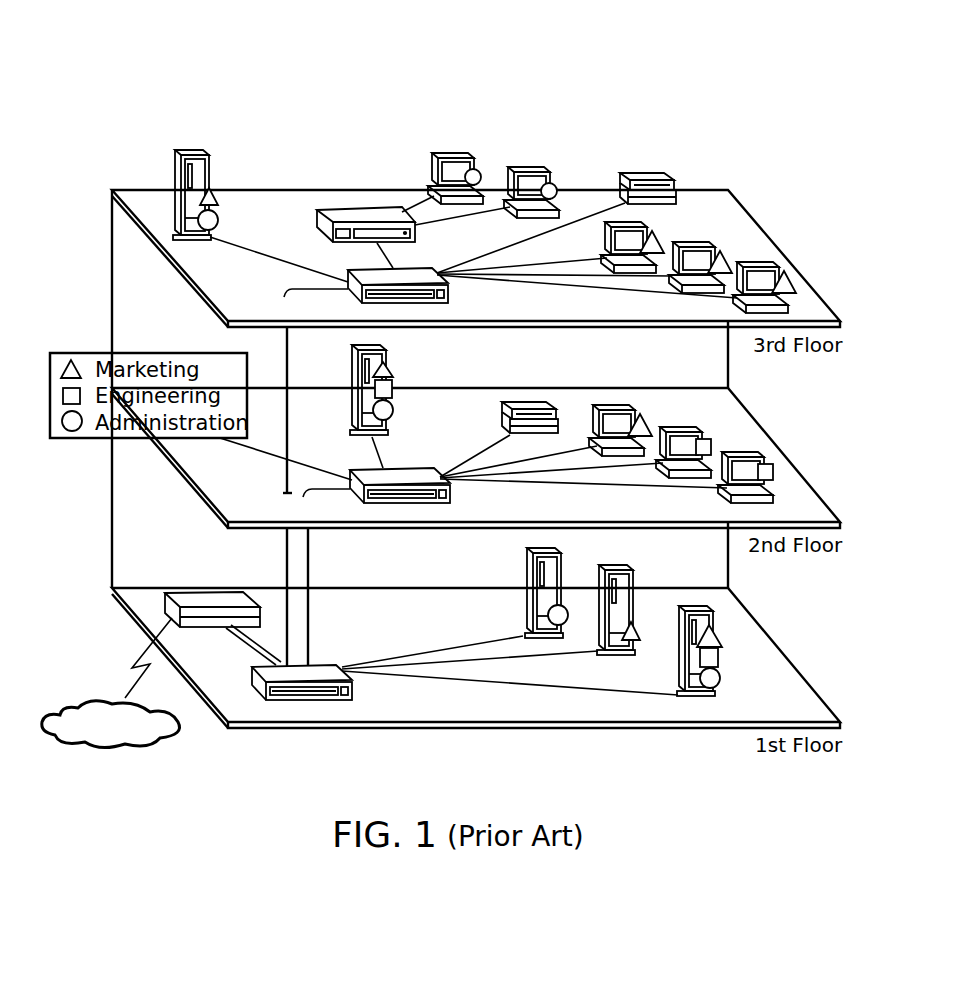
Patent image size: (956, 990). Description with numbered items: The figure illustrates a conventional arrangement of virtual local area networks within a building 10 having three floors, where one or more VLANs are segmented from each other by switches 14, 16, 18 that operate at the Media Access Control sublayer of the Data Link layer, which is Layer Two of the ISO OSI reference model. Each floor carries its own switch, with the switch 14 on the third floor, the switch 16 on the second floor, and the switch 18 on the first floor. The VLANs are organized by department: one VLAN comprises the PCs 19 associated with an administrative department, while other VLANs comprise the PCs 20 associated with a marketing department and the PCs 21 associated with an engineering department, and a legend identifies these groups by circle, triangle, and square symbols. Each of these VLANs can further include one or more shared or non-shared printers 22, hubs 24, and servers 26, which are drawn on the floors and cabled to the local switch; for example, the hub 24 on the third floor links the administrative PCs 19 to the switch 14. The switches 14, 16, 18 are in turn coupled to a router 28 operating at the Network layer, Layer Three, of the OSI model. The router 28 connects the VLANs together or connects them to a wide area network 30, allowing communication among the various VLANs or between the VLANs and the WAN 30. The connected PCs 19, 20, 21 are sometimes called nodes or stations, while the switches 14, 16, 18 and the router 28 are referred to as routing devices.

The building 10 is at (206, 70).
The switch 14 is at (413, 278).
The switch 16 is at (355, 468).
The switch 18 is at (323, 668).
The PCs 19 is at (522, 165).
The PCs 20 is at (648, 220).
The PCs 21 is at (705, 427).
The printers 22 is at (677, 181).
The hubs 24 is at (343, 210).
The servers 26 is at (200, 163).
The router 28 is at (193, 600).
The wide area network (WAN) 30 is at (137, 750).